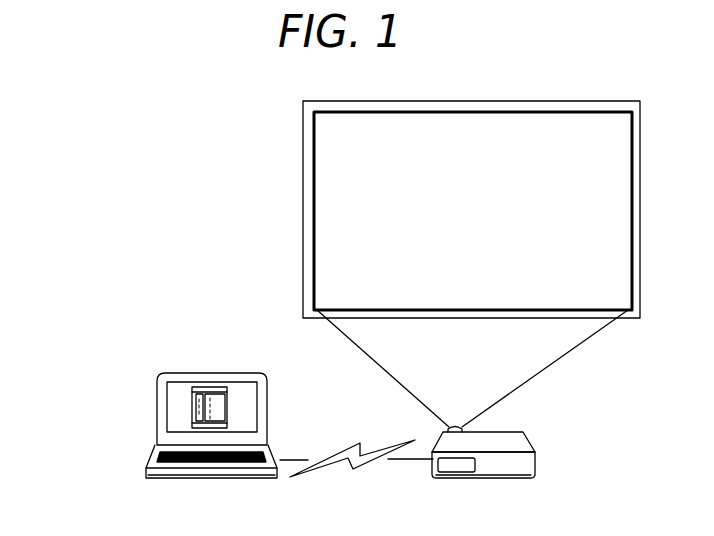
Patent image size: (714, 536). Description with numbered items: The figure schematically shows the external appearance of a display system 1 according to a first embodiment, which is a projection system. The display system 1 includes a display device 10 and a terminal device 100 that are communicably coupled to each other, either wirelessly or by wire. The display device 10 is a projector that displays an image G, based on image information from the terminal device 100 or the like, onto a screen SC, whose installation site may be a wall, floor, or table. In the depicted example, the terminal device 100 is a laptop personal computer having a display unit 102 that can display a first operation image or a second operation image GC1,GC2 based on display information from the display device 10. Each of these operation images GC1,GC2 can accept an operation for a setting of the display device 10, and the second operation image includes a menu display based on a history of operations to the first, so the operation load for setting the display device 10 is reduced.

The display system 1 is at (86, 158).
The screen SC is at (302, 194).
The image G is at (313, 218).
The display device 10 is at (532, 441).
The terminal device 100 is at (210, 372).
The display unit 102 is at (167, 392).
The first operation image and second operation image GC1,GC2 is at (192, 415).